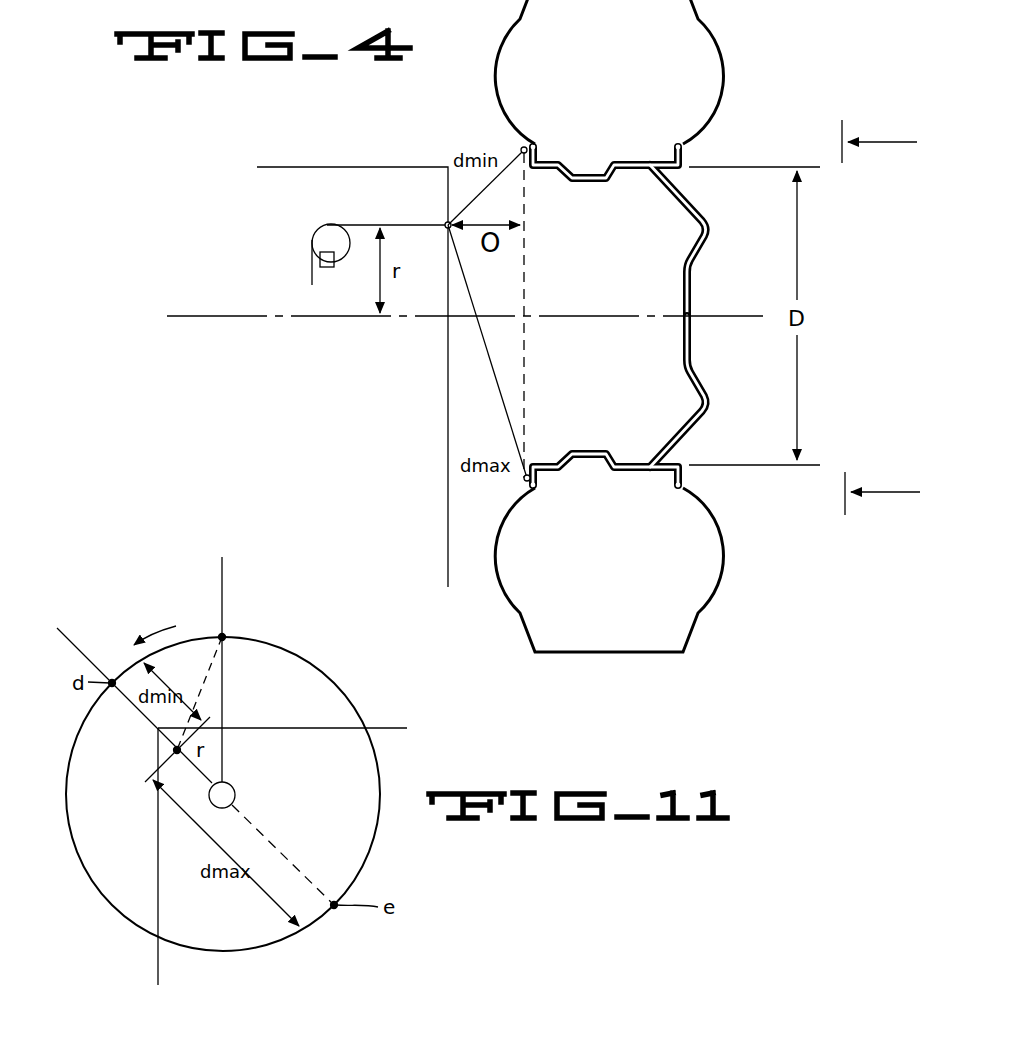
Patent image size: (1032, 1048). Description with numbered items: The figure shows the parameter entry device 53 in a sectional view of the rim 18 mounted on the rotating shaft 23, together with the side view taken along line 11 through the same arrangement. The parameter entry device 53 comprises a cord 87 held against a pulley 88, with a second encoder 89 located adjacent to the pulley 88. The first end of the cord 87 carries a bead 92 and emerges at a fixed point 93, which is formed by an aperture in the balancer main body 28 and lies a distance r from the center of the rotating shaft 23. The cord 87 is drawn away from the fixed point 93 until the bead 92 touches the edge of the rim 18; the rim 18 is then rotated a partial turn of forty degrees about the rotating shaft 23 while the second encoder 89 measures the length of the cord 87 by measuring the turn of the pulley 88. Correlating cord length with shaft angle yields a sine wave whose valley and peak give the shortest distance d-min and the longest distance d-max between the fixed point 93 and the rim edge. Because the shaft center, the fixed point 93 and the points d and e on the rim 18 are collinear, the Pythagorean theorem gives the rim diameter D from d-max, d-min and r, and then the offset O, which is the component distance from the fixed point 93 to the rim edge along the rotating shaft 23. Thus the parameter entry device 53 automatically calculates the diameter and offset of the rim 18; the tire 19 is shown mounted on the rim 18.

In FIG. 4, the section line 11 is at (883, 316).
In FIG. 4, the rim 18 is at (651, 316).
In FIG. 11, the rim 18 is at (335, 686).
In FIG. 4, the tire 19 is at (718, 62).
In FIG. 4, the rotating shaft 23 is at (268, 320).
In FIG. 11, the rotating shaft 23 is at (234, 789).
In FIG. 4, the balancer main body 28 is at (325, 166).
In FIG. 4, the parameter entry device 53 is at (316, 219).
In FIG. 4, the cord 87 is at (400, 225).
In FIG. 4, the pulley 88 is at (326, 238).
In FIG. 4, the second encoder 89 is at (322, 262).
In FIG. 4, the bead 92 is at (522, 148).
In FIG. 11, the bead 92 is at (222, 636).
In FIG. 4, the fixed point 93 is at (445, 224).
In FIG. 11, the fixed point 93 is at (154, 749).